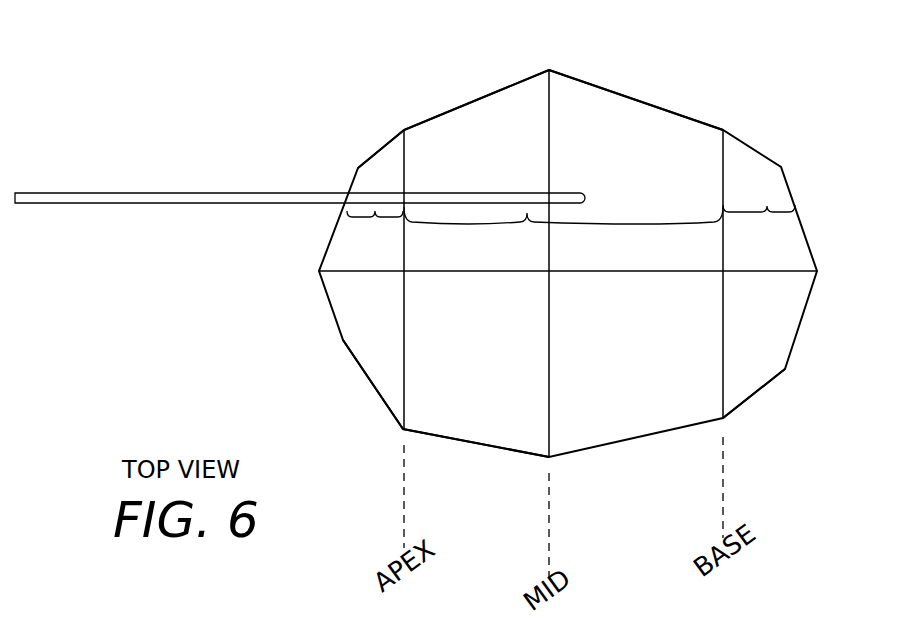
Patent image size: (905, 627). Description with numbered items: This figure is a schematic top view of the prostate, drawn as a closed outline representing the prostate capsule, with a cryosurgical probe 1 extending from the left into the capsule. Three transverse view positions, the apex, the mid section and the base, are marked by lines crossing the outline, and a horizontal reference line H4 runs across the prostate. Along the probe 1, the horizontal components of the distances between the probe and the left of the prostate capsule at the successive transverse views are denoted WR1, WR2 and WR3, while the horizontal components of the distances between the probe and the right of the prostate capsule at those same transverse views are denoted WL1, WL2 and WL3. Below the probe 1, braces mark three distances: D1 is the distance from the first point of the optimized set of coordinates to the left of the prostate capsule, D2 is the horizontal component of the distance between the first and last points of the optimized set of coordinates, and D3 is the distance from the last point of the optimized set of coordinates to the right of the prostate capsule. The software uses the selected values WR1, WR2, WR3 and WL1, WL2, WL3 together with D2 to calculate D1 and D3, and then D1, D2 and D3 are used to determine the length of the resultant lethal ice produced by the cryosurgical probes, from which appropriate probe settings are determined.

The cryosurgical probe 1 is at (300, 180).
The height reference line H4 is at (787, 271).
The horizontal distance between probe and left of prostate capsule WR1 is at (403, 167).
The horizontal distance between probe and left of prostate capsule WR2 is at (548, 110).
The horizontal distance between probe and left of prostate capsule WR3 is at (723, 167).
The horizontal distance between probe and right of prostate capsule WL1 is at (403, 326).
The horizontal distance between probe and right of prostate capsule WL2 is at (549, 335).
The horizontal distance between probe and right of prostate capsule WL3 is at (723, 337).
The distance from first point of optimized coordinates to left of prostate capsule D1 is at (375, 231).
The horizontal component of distance between first and last optimized points D2 is at (563, 233).
The distance from last point of optimized coordinates to right of prostate capsule D3 is at (759, 228).